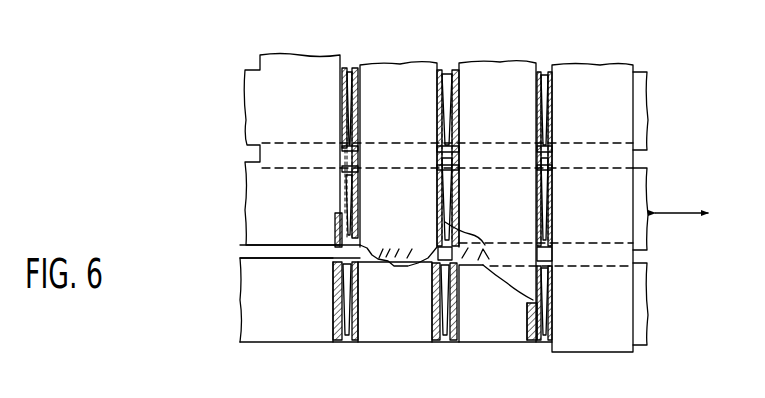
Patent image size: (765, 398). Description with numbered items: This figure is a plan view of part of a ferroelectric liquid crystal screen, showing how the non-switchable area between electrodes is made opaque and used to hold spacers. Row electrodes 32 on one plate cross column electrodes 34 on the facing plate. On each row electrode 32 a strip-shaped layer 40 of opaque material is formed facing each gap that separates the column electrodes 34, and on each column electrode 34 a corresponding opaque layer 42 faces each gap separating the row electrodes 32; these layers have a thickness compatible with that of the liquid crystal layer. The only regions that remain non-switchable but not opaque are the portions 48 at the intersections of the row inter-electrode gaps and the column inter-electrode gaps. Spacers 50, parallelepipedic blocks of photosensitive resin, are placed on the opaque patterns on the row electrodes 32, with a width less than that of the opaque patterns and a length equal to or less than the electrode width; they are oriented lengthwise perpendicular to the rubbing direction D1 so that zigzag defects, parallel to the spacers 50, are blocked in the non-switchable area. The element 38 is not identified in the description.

The row electrode 32 is at (253, 193).
The column electrode 34 is at (513, 73).
The bolt fastener assemblies 38 is at (449, 63).
The opaque material layer on row electrode 40 is at (337, 102).
The opaque material layer on column electrode 42 is at (397, 263).
The non-opaque non-switchable portion 48 is at (550, 158).
The spacer 50 is at (450, 175).
The rubbing direction D1 is at (678, 213).